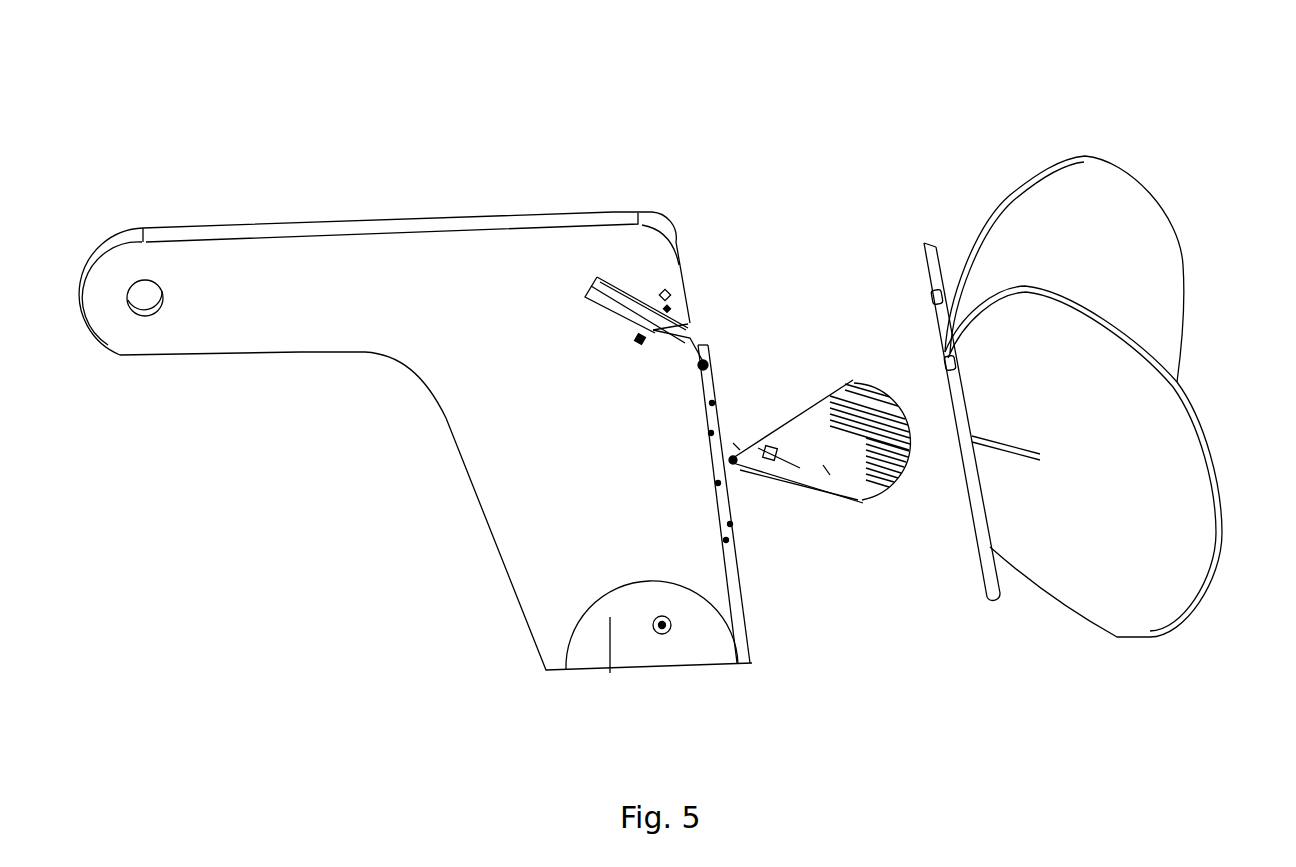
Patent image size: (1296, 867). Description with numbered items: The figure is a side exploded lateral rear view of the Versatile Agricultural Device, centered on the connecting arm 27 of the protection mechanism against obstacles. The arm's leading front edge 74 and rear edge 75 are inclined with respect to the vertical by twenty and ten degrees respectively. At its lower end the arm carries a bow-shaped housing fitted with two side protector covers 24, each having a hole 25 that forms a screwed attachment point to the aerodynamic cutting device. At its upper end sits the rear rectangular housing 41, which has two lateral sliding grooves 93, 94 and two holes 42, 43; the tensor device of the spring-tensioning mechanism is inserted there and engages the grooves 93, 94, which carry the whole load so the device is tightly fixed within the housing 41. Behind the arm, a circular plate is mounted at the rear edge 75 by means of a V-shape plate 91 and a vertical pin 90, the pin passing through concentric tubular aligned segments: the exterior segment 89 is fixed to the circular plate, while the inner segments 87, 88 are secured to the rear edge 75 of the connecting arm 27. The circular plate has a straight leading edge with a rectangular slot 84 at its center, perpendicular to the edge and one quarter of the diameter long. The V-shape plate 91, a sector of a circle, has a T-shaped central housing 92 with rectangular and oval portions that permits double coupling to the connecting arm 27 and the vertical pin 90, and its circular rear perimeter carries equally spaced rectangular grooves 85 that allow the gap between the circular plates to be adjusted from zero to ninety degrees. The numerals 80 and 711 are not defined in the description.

The connecting arm 27 is at (230, 267).
The pivot hole 80 is at (145, 305).
The leading front edge 74 is at (478, 500).
The rear rectangular housing 41 is at (612, 290).
The groove 93 is at (645, 316).
The hole 43 is at (640, 340).
The groove 94 is at (672, 297).
The hole 42 is at (690, 322).
The rear edge 75 is at (745, 597).
The inner tubular aligned segment 88 is at (712, 403).
The exterior tubular aligned segment 89 is at (730, 523).
The inner tubular aligned segment 87 is at (733, 443).
The T-shaped central housing 92 is at (730, 460).
The groove 85 is at (857, 383).
The V-shape plate 91 is at (823, 465).
The side protector cover 24 is at (610, 660).
The hole 25 is at (662, 635).
The vertical pin 90 is at (935, 240).
The shell 711 is at (1048, 228).
The rectangular slot 84 is at (1040, 452).